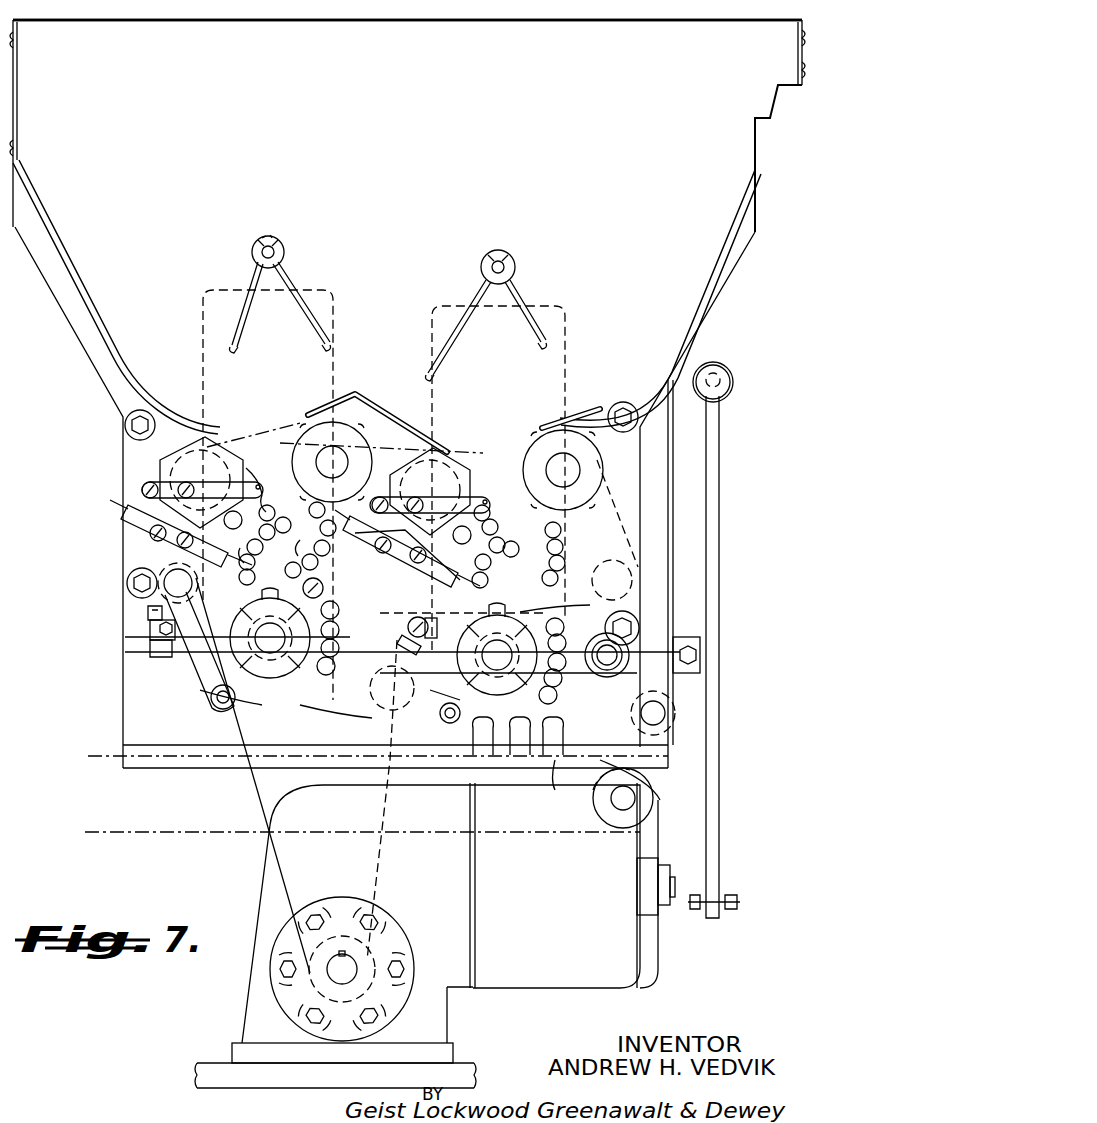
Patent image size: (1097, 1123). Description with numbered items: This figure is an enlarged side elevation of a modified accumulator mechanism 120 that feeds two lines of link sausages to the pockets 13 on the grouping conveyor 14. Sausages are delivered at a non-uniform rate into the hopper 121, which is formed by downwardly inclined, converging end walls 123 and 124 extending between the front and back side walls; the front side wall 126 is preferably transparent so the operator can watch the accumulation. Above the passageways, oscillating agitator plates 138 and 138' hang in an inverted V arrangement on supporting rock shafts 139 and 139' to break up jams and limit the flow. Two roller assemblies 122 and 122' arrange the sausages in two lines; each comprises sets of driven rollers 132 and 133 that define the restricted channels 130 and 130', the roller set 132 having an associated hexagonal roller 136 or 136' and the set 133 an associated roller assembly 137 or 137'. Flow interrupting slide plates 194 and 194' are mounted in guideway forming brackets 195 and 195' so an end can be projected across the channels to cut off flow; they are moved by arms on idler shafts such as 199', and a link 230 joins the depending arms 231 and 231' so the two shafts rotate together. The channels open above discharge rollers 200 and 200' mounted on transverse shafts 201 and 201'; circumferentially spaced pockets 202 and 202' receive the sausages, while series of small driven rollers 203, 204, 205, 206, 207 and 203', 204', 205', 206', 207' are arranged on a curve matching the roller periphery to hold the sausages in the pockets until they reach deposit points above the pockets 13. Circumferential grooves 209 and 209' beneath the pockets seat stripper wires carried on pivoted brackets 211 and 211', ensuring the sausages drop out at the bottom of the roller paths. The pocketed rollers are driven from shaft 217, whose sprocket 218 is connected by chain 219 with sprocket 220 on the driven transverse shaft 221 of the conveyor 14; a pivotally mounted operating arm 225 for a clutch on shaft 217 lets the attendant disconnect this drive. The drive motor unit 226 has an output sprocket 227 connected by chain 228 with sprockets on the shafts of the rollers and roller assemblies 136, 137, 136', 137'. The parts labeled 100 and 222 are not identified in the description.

The accumulator mechanism 120 is at (68, 335).
The hopper 121 is at (195, 22).
The front side wall 126 is at (600, 28).
The end wall 123 is at (70, 265).
The end wall 124 is at (690, 275).
The roller assembly 122 is at (385, 529).
The roller assembly 122' is at (619, 484).
The supporting shaft 139 is at (273, 229).
The supporting shaft 139' is at (504, 244).
The oscillating plate 138 is at (268, 481).
The oscillating plate 138' is at (496, 465).
The roller assembly 137 is at (345, 443).
The roller assembly 137' is at (556, 452).
The hexagonal roller 136 is at (196, 475).
The hexagonal roller 136' is at (441, 483).
The flow interrupting slide plate 194 is at (156, 505).
The flow interrupting slide plate 194' is at (416, 507).
The guideway forming bracket 195 is at (145, 533).
The guideway forming bracket 195' is at (407, 557).
The idler shaft 199' is at (407, 556).
The passageway 130 is at (287, 532).
The passageway 130' is at (518, 546).
The driven roller set 132 is at (258, 482).
The driven roller set 133 is at (272, 547).
The sausage accommodating pocket 202 is at (265, 560).
The sausage accommodating pocket 202' is at (615, 580).
The discharge roller 200 is at (218, 768).
The discharge roller 200' is at (497, 631).
The driven roller 203 is at (354, 608).
The driven roller 204 is at (357, 628).
The driven roller 205 is at (357, 646).
The driven roller 206 is at (341, 676).
The driven roller 207 is at (323, 645).
The driven roller 203' is at (592, 628).
The driven roller 204' is at (591, 666).
The driven roller 205' is at (591, 684).
The driven roller 206' is at (589, 699).
The driven roller 207' is at (586, 716).
The circumferential groove 209 is at (270, 715).
The circumferential groove 209' is at (562, 599).
The transverse shaft 201 is at (241, 717).
The transverse shaft 201' is at (471, 688).
The pivoted bracket 211 is at (369, 639).
The pivoted bracket 211' is at (406, 663).
The driven shaft 217 is at (632, 632).
The sprocket 218 is at (622, 662).
The chain 219 is at (655, 782).
The sprocket 220 is at (625, 820).
The driven transverse shaft 221 is at (612, 800).
The base 222 is at (258, 1090).
The operating arm 225 is at (720, 545).
The drive motor unit 226 is at (345, 968).
The output sprocket 227 is at (400, 987).
The chain 228 is at (392, 840).
The link 230 is at (366, 722).
The depending arm 231 is at (192, 654).
The depending arm 231' is at (434, 724).
The frame 100 is at (495, 760).
The pocket forming members 13 is at (555, 786).
The conveyor 14 is at (497, 850).